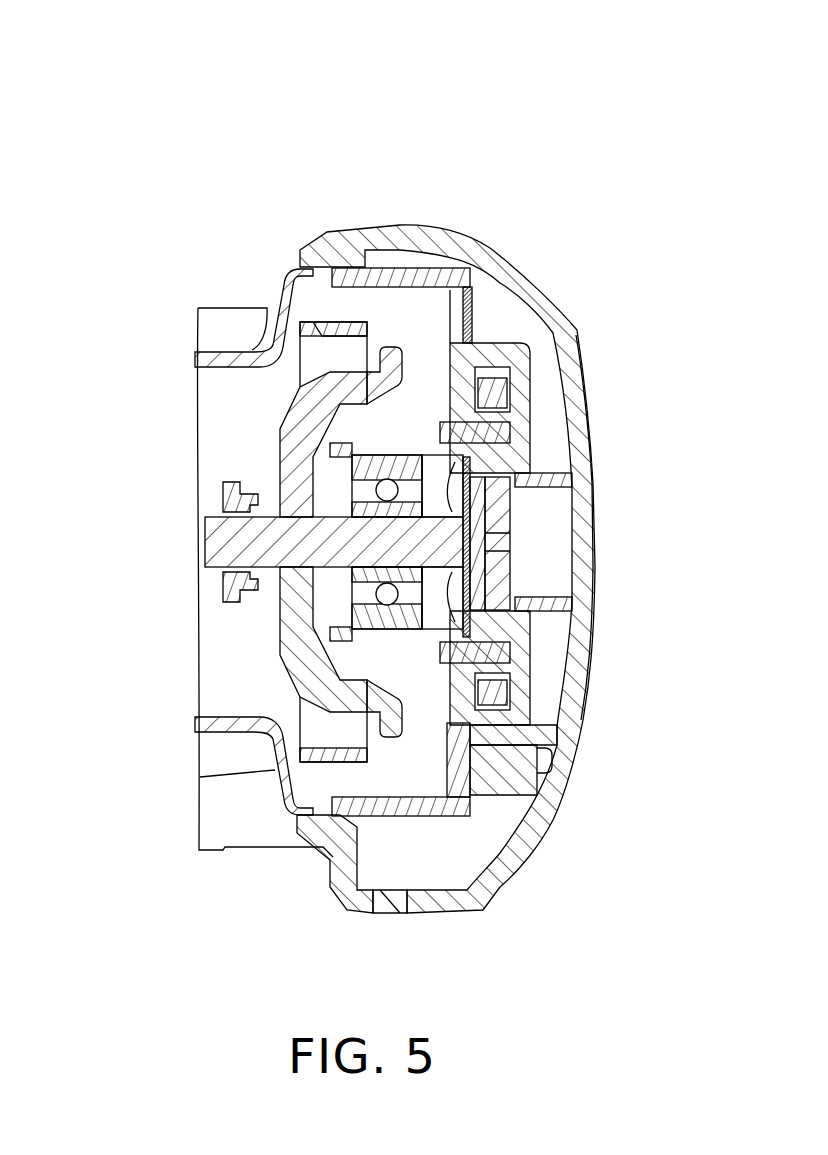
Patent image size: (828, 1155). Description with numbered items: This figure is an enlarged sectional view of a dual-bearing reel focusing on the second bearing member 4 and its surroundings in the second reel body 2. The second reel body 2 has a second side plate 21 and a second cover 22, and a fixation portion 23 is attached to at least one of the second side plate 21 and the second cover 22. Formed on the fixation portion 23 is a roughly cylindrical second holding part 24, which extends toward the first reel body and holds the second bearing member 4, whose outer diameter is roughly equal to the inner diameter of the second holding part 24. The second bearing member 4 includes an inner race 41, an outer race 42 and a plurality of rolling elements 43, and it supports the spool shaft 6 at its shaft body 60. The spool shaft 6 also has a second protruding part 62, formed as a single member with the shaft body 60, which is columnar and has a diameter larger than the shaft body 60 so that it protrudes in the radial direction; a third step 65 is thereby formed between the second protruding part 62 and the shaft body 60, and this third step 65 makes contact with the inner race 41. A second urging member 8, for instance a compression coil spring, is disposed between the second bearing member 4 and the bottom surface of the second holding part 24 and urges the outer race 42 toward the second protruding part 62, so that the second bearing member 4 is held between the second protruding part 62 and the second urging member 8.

The second reel body 2 is at (469, 460).
The second side plate 21 is at (362, 224).
The second cover 22 is at (541, 283).
The fixation portion 23 is at (490, 380).
The second holding part 24 is at (355, 450).
The second bearing member 4 is at (340, 472).
The spool shaft 6 is at (212, 583).
The shaft body 60 is at (443, 537).
The second protruding part 62 is at (240, 486).
The third step 65 is at (320, 540).
The second urging member 8 is at (443, 585).
The inner race 41 is at (353, 597).
The rolling elements 43 is at (360, 610).
The outer race 42 is at (347, 630).